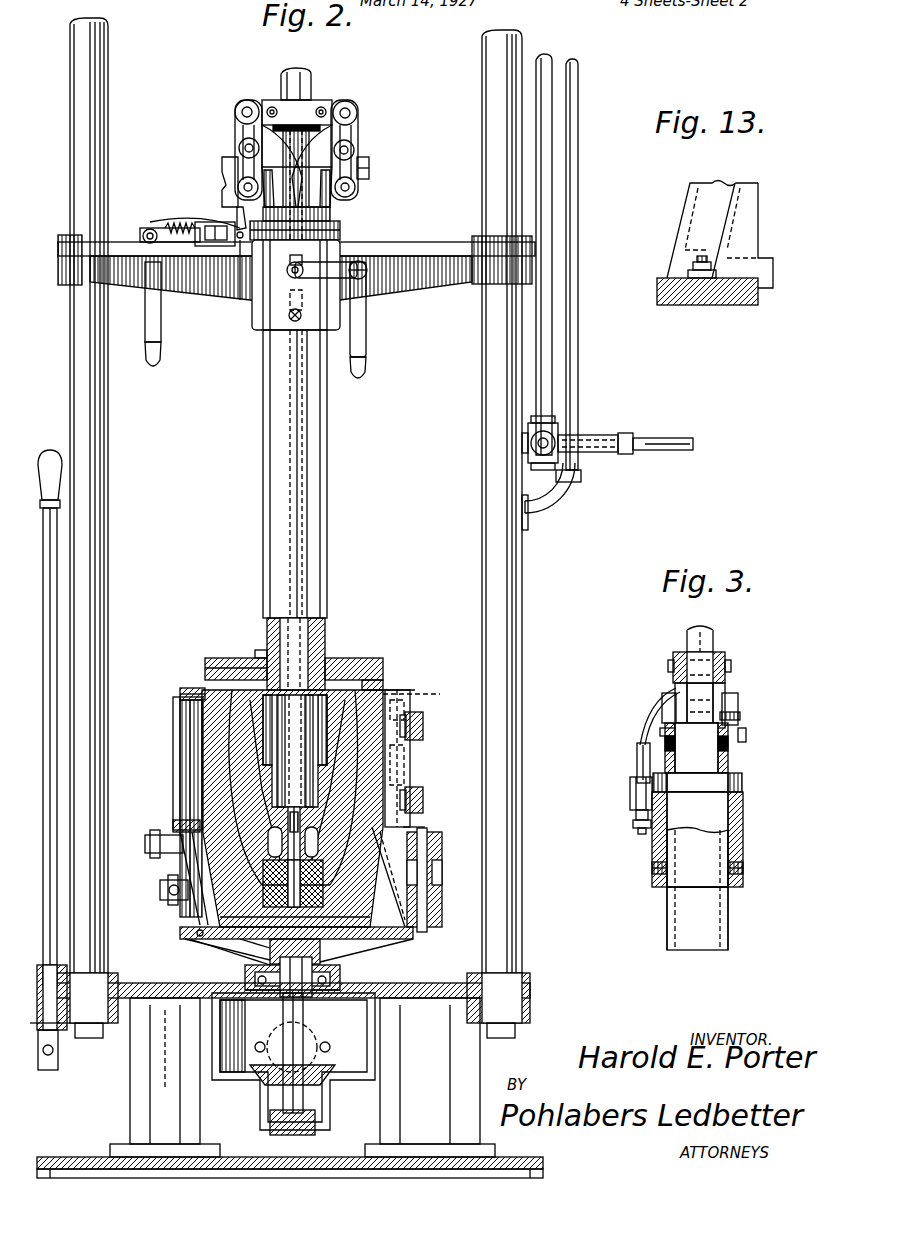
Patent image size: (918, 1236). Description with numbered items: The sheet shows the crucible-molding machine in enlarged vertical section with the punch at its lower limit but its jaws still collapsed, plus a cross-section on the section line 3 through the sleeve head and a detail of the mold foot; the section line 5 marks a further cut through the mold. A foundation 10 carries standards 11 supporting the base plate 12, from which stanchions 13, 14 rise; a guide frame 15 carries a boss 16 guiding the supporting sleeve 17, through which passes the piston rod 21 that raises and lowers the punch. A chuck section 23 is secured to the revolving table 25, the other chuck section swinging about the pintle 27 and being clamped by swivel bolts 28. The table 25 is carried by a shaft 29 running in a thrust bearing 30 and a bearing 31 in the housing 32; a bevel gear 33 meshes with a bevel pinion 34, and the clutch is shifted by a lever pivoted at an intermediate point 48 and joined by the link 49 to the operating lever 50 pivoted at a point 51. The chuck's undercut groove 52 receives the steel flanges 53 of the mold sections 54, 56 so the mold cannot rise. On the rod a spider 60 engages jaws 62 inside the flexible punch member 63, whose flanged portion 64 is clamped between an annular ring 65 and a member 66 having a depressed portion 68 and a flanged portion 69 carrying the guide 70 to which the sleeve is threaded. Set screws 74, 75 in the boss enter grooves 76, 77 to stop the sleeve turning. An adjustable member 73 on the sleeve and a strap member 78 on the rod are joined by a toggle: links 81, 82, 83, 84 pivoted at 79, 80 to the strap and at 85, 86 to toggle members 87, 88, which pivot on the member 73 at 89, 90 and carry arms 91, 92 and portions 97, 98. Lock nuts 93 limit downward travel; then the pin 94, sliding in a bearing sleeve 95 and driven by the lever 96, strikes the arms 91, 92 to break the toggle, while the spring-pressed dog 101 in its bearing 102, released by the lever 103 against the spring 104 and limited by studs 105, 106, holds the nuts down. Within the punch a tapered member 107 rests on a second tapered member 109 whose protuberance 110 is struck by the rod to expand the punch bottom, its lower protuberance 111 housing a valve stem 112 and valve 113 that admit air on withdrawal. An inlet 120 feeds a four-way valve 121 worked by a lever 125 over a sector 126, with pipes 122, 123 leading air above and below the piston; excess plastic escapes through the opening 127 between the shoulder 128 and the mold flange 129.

In FIG. 2, the section line 3 is at (320, 53).
In FIG. 2, the section line 5 is at (165, 690).
In FIG. 2, the foundation 10 is at (525, 1160).
In FIG. 2, the standards 11 is at (130, 1100).
In FIG. 2, the base plate 12 is at (415, 985).
In FIG. 2, the stanchion 13 is at (522, 650).
In FIG. 2, the stanchion 14 is at (104, 543).
In FIG. 2, the guide frame 15 is at (432, 252).
In FIG. 2, the bearing or boss 16 is at (255, 325).
In FIG. 3, the bearing or boss 16 is at (743, 835).
In FIG. 2, the supporting sleeve 17 is at (320, 475).
In FIG. 3, the supporting sleeve 17 is at (700, 948).
In FIG. 2, the piston rod 21 is at (311, 80).
In FIG. 3, the piston rod 21 is at (687, 638).
In FIG. 2, the chuck section 23 is at (174, 811).
In FIG. 13, the chuck section 23 is at (758, 247).
In FIG. 2, the revolving table 25 is at (222, 940).
In FIG. 13, the revolving table 25 is at (755, 305).
In FIG. 2, the pintle 27 is at (432, 880).
In FIG. 2, the swivel bolts 28 is at (160, 890).
In FIG. 2, the shaft 29 is at (345, 985).
In FIG. 2, the thrust bearing 30 is at (340, 975).
In FIG. 2, the bearing 31 is at (308, 1123).
In FIG. 2, the housing 32 is at (232, 1085).
In FIG. 2, the bevel gear 33 is at (345, 1085).
In FIG. 2, the bevel pinion 34 is at (318, 1040).
In FIG. 2, the pivot point 48 is at (162, 1059).
In FIG. 2, the link 49 is at (48, 768).
In FIG. 2, the operating lever 50 is at (196, 790).
In FIG. 2, the pivot 51 is at (185, 939).
In FIG. 2, the undercut groove 52 is at (325, 960).
In FIG. 13, the undercut groove 52 is at (695, 275).
In FIG. 2, the annular steel flanges 53 is at (200, 936).
In FIG. 13, the annular steel flanges 53 is at (706, 270).
In FIG. 2, the mold section 54 is at (190, 755).
In FIG. 2, the mold section 56 is at (410, 758).
In FIG. 13, the mold section 56 is at (700, 225).
In FIG. 2, the spider 60 is at (203, 735).
In FIG. 2, the jaws 62 is at (252, 800).
In FIG. 2, the flexible expansible punch member 63 is at (380, 760).
In FIG. 2, the flanged portion 64 is at (200, 680).
In FIG. 2, the annular ring 65 is at (205, 686).
In FIG. 2, the member 66 is at (212, 660).
In FIG. 2, the depressed portion 68 is at (258, 652).
In FIG. 2, the flanged portion 69 is at (335, 660).
In FIG. 2, the guide 70 is at (325, 640).
In FIG. 2, the adjustable member 73 is at (330, 210).
In FIG. 3, the adjustable member 73 is at (730, 765).
In FIG. 2, the set screw 74 is at (290, 320).
In FIG. 3, the set screw 74 is at (655, 872).
In FIG. 3, the set screw 75 is at (743, 870).
In FIG. 2, the groove 76 is at (292, 408).
In FIG. 3, the groove 76 is at (667, 925).
In FIG. 3, the groove 77 is at (728, 920).
In FIG. 2, the strap member 78 is at (305, 108).
In FIG. 3, the strap member 78 is at (722, 652).
In FIG. 2, the pivot point 79 is at (244, 106).
In FIG. 3, the pivot point 79 is at (728, 665).
In FIG. 2, the pivot point 80 is at (358, 112).
In FIG. 2, the link 81 is at (238, 128).
In FIG. 3, the link 81 is at (676, 684).
In FIG. 2, the link 82 is at (248, 152).
In FIG. 3, the link 82 is at (728, 690).
In FIG. 2, the link 83 is at (358, 133).
In FIG. 2, the link 84 is at (345, 152).
In FIG. 2, the pivot point 85 is at (239, 150).
In FIG. 3, the pivot point 85 is at (738, 705).
In FIG. 2, the pivot point 86 is at (355, 151).
In FIG. 2, the toggle member 87 is at (238, 189).
In FIG. 2, the toggle member 88 is at (369, 172).
In FIG. 2, the pivot point 89 is at (240, 196).
In FIG. 3, the pivot point 89 is at (746, 740).
In FIG. 2, the pivot point 90 is at (356, 189).
In FIG. 2, the arm 91 is at (282, 166).
In FIG. 3, the arm 91 is at (642, 718).
In FIG. 2, the arm 92 is at (312, 166).
In FIG. 2, the lock nuts 93 is at (340, 230).
In FIG. 3, the lock nuts 93 is at (742, 780).
In FIG. 2, the pin 94 is at (262, 262).
In FIG. 3, the pin 94 is at (640, 760).
In FIG. 2, the bearing sleeve 95 is at (290, 268).
In FIG. 3, the bearing sleeve 95 is at (632, 795).
In FIG. 2, the manually actuating lever 96 is at (366, 320).
In FIG. 3, the manually actuating lever 96 is at (637, 832).
In FIG. 2, the portion 97 is at (224, 165).
In FIG. 2, the portion 98 is at (369, 180).
In FIG. 2, the spring-pressed dog 101 is at (142, 232).
In FIG. 2, the bearing 102 is at (212, 246).
In FIG. 2, the manually operated lever 103 is at (146, 320).
In FIG. 2, the spring 104 is at (166, 226).
In FIG. 2, the stud 105 is at (170, 218).
In FIG. 2, the stud 106 is at (150, 246).
In FIG. 2, the tapered member 107 is at (395, 790).
In FIG. 2, the second tapered member 109 is at (410, 830).
In FIG. 2, the hollow protuberance 110 is at (400, 815).
In FIG. 2, the hollow protuberance 111 is at (366, 953).
In FIG. 2, the valve stem 112 is at (240, 948).
In FIG. 2, the valve 113 is at (255, 940).
In FIG. 2, the inlet 120 is at (688, 436).
In FIG. 2, the four-way valve 121 is at (555, 432).
In FIG. 2, the pipe 122 is at (552, 280).
In FIG. 2, the pipe 123 is at (578, 318).
In FIG. 2, the lever 125 is at (652, 452).
In FIG. 2, the sector 126 is at (575, 508).
In FIG. 2, the opening 127 is at (385, 690).
In FIG. 2, the shoulder 128 is at (383, 678).
In FIG. 2, the flange 129 is at (395, 693).